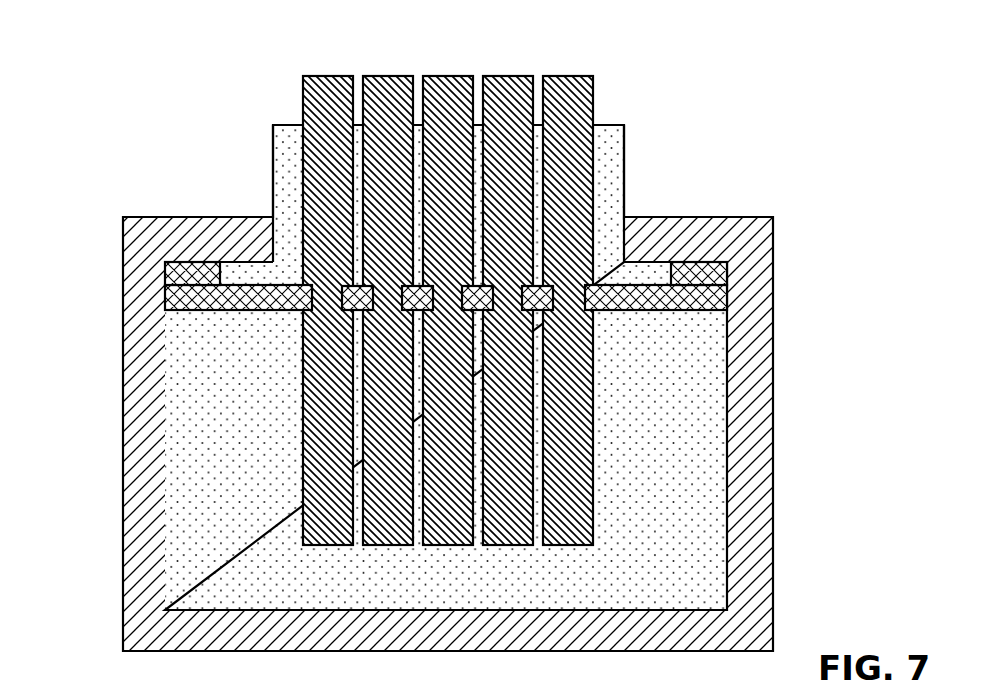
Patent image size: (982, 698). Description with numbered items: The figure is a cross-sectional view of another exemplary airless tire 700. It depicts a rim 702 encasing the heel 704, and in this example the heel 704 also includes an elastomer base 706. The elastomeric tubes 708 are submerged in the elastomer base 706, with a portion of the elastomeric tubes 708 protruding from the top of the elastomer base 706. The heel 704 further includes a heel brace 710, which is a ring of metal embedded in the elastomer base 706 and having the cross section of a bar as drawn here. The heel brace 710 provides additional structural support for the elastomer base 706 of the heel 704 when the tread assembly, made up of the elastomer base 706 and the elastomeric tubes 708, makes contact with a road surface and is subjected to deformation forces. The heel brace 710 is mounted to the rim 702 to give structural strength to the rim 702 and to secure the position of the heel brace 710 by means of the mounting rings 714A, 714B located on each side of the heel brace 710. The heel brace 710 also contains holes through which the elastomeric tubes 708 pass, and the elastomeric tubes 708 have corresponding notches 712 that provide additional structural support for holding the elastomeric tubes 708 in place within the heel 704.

The airless tire 700 is at (432, 327).
The rim 702 is at (123, 337).
The heel 704 is at (446, 367).
The elastomer base 706 is at (273, 185).
The elastomeric tubes 708 is at (303, 62).
The heel brace 710 is at (706, 315).
The notches 712 is at (593, 308).
The mounting ring 714A is at (192, 273).
The mounting ring 714B is at (700, 273).